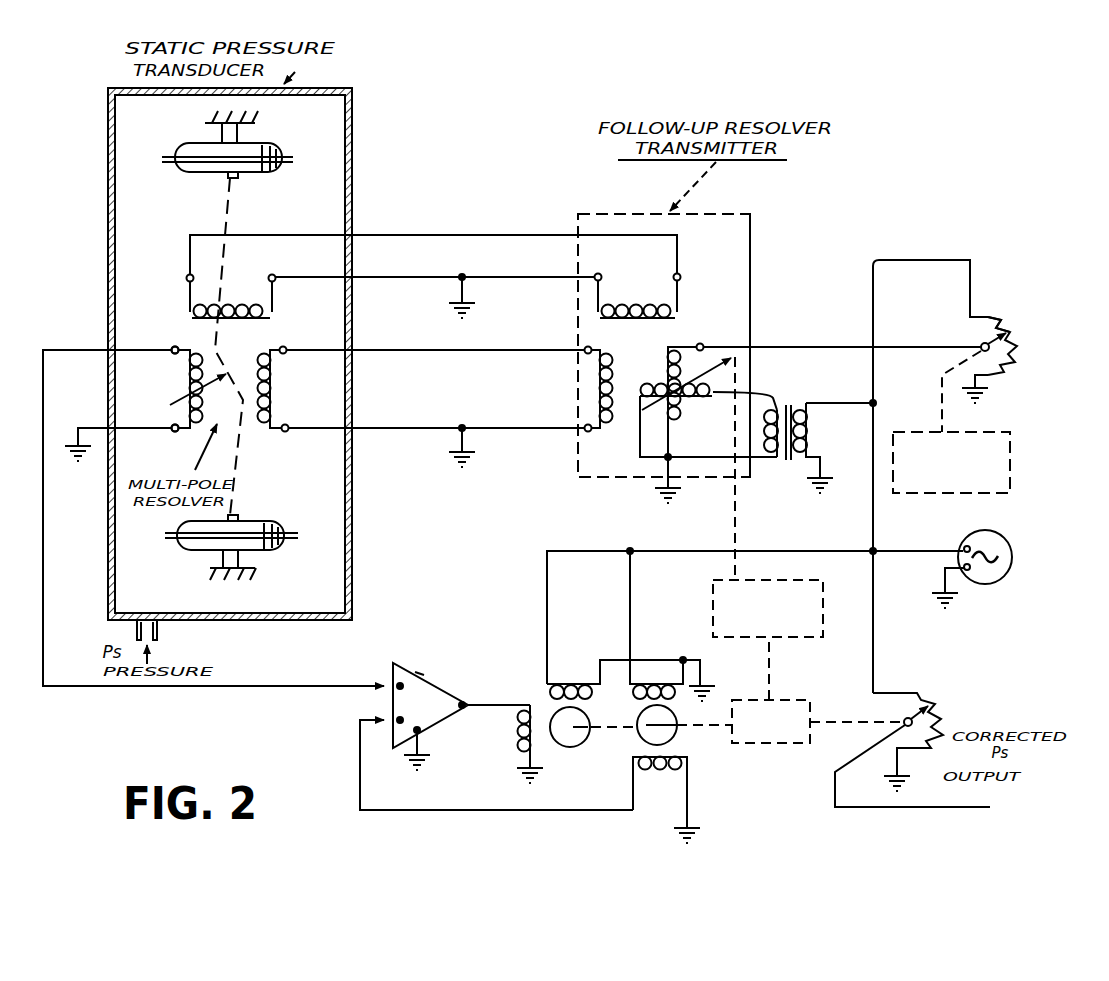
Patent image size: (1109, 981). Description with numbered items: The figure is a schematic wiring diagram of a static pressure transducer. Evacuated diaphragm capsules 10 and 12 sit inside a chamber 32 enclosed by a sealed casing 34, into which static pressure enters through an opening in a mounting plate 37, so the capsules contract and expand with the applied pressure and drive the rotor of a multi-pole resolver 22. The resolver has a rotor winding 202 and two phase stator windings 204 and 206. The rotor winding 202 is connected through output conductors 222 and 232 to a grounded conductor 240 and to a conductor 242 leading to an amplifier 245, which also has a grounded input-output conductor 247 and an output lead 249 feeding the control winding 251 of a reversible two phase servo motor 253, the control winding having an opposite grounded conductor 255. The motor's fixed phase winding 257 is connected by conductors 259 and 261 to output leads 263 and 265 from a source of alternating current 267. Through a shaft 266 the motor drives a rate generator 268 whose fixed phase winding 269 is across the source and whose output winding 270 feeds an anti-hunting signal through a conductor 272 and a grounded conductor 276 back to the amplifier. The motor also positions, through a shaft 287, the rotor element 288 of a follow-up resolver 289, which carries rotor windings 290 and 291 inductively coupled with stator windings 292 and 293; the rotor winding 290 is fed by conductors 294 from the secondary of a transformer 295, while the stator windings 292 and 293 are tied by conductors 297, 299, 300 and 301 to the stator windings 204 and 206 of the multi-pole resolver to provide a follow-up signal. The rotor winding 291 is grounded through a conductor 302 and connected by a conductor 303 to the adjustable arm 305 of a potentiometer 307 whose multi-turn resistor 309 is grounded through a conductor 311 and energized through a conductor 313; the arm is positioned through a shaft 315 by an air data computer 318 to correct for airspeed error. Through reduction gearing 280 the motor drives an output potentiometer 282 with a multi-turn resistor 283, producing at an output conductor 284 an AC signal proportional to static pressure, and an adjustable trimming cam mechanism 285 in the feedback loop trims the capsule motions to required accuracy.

The diaphragm capsule 10 is at (200, 551).
The diaphragm capsule 12 is at (204, 174).
The multi-pole resolver 22 is at (187, 324).
The chamber 32 is at (324, 130).
The sealed casing 34 is at (108, 172).
The mounting plate 37 is at (240, 622).
The rotor winding 202 is at (190, 386).
The stator winding 204 is at (235, 304).
The stator winding 206 is at (276, 397).
The output conductor 222 is at (174, 432).
The output conductor 232 is at (172, 348).
The grounded conductor 240 is at (100, 428).
The conductor 242 is at (80, 349).
The amplifier 245 is at (430, 684).
The grounded input-output conductor 247 is at (421, 741).
The output lead 249 is at (471, 703).
The control winding 251 is at (522, 733).
The servo motor 253 is at (571, 749).
The grounded conductor 255 is at (524, 766).
The fixed phase winding 257 is at (572, 687).
The conductor 259 is at (582, 550).
The conductor 261 is at (615, 658).
The output lead 263 is at (822, 403).
The output lead 265 is at (957, 590).
The shaft 266 is at (626, 731).
The source of alternating current 267 is at (1011, 545).
The rate generator 268 is at (679, 737).
The fixed phase winding 269 is at (656, 685).
The output winding 270 is at (660, 793).
The conductor 272 is at (460, 813).
The grounded conductor 276 is at (690, 798).
The reduction gearing 280 is at (790, 700).
The potentiometer 282 is at (882, 729).
The multi-turn resistor 283 is at (943, 720).
The output conductor 284 is at (940, 810).
The adjustable trimming cam mechanism 285 is at (770, 582).
The shaft 287 is at (733, 511).
The rotor element 288 is at (597, 453).
The follow-up resolver 289 is at (752, 295).
The rotor winding 290 is at (698, 396).
The rotor winding 291 is at (668, 376).
The stator winding 292 is at (638, 310).
The stator winding 293 is at (598, 387).
The conductors 294 is at (776, 408).
The transformer 295 is at (789, 462).
The conductor 297 is at (437, 234).
The conductor 299 is at (432, 277).
The conductor 300 is at (372, 350).
The connecting lead 301 is at (374, 427).
The conductor 302 is at (676, 441).
The conductor 303 is at (786, 347).
The adjustable arm 305 is at (1015, 356).
The potentiometer 307 is at (977, 333).
The multi-turn resistor 309 is at (997, 318).
The conductor 311 is at (983, 383).
The conductor 313 is at (920, 258).
The shaft 315 is at (946, 423).
The air data computer 318 is at (1014, 470).